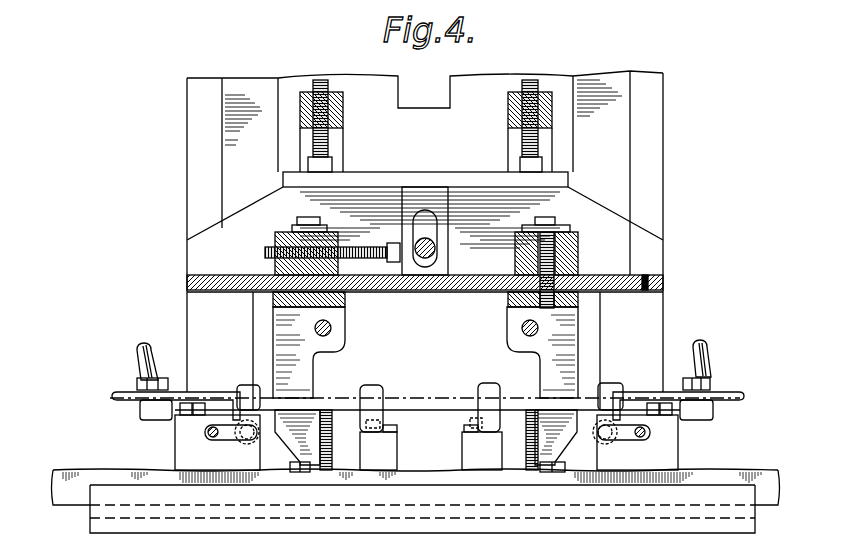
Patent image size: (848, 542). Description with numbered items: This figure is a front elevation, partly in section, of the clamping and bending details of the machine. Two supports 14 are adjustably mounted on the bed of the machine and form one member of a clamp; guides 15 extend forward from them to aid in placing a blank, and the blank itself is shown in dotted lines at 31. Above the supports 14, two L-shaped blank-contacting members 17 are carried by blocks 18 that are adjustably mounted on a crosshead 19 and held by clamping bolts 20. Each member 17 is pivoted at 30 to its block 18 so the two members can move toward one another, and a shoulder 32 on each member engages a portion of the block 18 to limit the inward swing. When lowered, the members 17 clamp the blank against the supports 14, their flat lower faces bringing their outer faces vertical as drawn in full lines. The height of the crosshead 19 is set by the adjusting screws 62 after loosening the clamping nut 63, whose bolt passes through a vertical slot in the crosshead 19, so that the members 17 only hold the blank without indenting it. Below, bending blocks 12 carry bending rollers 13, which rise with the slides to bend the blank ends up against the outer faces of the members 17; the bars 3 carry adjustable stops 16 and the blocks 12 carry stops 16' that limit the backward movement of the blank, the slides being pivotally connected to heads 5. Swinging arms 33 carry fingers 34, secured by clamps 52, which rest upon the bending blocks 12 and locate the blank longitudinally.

The bars 3 is at (76, 495).
The heads 5 is at (207, 363).
The bending blocks 12 is at (185, 444).
The bending rollers 13 is at (250, 445).
The supports 14 is at (296, 440).
The guides 15 is at (331, 445).
The adjustable stops 16 is at (431, 426).
The stops 16' is at (426, 379).
The blank-contacting members 17 is at (302, 378).
The blocks 18 is at (273, 301).
The crosshead 19 is at (436, 285).
The clamping bolts 20 is at (297, 216).
The pivots 30 is at (330, 333).
The blank 31 is at (421, 398).
The shoulder 32 is at (336, 312).
The swinging arms 33 is at (138, 358).
The fingers 34 is at (128, 399).
The clamps 52 is at (138, 386).
The adjusting screws 62 is at (510, 141).
The clamping nut 63 is at (416, 264).